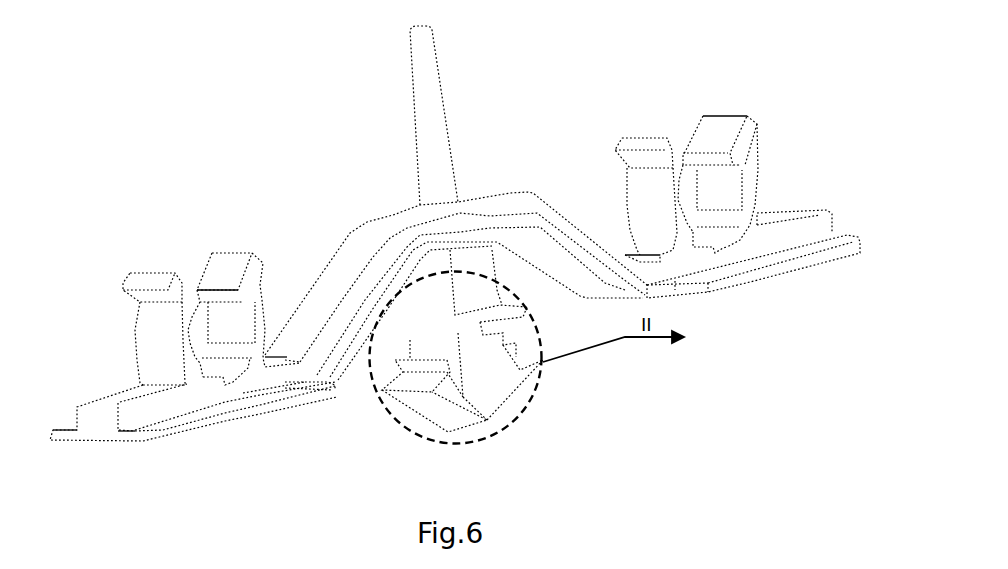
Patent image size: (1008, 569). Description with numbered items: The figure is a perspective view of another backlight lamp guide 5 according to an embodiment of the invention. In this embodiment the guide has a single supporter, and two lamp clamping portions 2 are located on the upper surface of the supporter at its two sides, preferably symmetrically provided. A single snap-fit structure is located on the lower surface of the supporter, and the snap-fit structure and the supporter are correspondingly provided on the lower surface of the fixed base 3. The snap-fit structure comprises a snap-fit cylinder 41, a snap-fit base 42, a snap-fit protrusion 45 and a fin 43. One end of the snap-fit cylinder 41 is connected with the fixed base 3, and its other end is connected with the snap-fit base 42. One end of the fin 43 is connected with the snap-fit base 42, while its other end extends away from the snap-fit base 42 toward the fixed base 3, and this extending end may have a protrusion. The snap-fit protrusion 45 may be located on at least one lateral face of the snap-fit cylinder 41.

The lamp clamping portion 2 is at (750, 182).
The fixed base 3 is at (94, 413).
The backlight lamp guide 5 is at (583, 97).
The snap-fit cylinder 41 is at (492, 387).
The snap-fit base 42 is at (492, 410).
The fin 43 is at (413, 407).
The snap-fit protrusion 45 is at (507, 325).